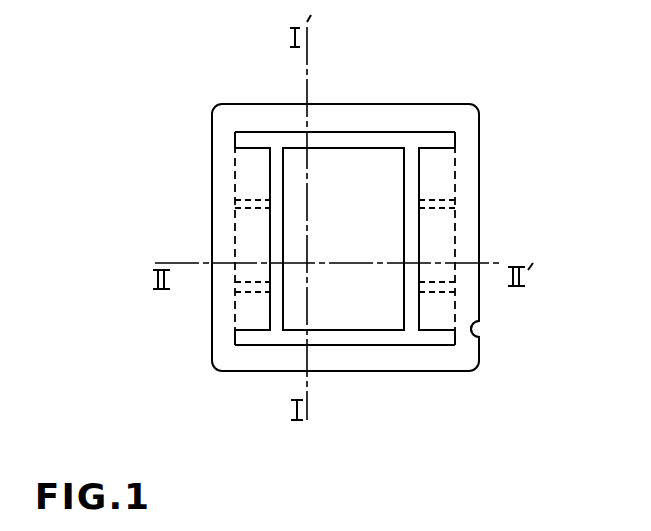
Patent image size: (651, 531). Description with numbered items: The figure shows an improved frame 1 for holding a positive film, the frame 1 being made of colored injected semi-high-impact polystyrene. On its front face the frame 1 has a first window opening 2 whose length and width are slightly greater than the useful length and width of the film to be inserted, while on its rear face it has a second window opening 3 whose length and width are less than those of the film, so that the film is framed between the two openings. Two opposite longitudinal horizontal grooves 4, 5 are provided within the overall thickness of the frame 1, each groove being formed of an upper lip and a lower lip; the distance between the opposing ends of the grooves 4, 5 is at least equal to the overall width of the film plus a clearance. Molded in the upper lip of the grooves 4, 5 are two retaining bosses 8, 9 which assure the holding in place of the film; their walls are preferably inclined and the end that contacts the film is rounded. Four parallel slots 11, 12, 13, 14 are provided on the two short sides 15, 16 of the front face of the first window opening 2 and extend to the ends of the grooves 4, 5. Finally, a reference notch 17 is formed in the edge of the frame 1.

The frame 1 is at (467, 167).
The first window opening 2 is at (382, 371).
The second window opening 3 is at (380, 148).
The longitudinal horizontal groove 4 is at (440, 236).
The longitudinal horizontal groove 5 is at (258, 227).
The retaining boss 8 is at (440, 205).
The retaining boss 9 is at (455, 288).
The parallel slot 11 is at (449, 140).
The parallel slot 12 is at (447, 340).
The parallel slot 13 is at (245, 343).
The parallel slot 14 is at (243, 142).
The short side 15 is at (338, 132).
The short side 16 is at (345, 345).
The reference notch 17 is at (480, 329).